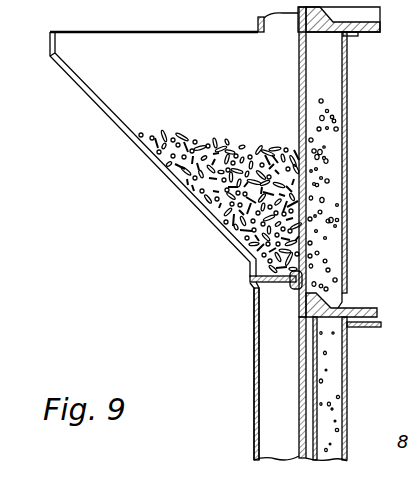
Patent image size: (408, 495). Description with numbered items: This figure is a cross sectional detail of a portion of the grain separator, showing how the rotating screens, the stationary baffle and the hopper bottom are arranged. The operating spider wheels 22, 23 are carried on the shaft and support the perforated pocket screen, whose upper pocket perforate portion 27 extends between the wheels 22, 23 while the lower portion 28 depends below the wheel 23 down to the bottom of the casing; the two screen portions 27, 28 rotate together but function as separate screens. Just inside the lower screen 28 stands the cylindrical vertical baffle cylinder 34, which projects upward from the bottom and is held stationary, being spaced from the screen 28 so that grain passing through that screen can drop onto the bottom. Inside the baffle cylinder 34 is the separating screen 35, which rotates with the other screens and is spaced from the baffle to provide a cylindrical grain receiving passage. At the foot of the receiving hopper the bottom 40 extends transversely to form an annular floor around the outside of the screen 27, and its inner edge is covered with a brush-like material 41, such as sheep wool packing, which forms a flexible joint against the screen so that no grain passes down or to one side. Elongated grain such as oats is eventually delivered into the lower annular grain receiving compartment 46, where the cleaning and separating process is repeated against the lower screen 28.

The operating spider wheel 22 is at (366, 32).
The operating spider wheel 23 is at (372, 306).
The upper pocket perforate screen portion 27 is at (299, 116).
The lower screen portion 28 is at (301, 378).
The baffle cylinder 34 is at (318, 390).
The separating screen 35 is at (348, 352).
The bottom 40 is at (277, 284).
The brush-like material 41 is at (304, 276).
The lower annular grain receiving compartment 46 is at (263, 425).